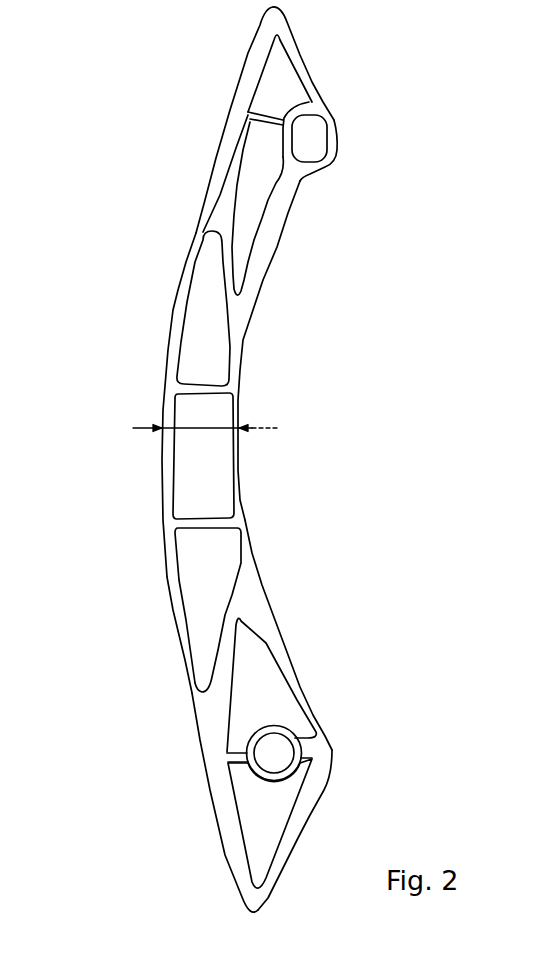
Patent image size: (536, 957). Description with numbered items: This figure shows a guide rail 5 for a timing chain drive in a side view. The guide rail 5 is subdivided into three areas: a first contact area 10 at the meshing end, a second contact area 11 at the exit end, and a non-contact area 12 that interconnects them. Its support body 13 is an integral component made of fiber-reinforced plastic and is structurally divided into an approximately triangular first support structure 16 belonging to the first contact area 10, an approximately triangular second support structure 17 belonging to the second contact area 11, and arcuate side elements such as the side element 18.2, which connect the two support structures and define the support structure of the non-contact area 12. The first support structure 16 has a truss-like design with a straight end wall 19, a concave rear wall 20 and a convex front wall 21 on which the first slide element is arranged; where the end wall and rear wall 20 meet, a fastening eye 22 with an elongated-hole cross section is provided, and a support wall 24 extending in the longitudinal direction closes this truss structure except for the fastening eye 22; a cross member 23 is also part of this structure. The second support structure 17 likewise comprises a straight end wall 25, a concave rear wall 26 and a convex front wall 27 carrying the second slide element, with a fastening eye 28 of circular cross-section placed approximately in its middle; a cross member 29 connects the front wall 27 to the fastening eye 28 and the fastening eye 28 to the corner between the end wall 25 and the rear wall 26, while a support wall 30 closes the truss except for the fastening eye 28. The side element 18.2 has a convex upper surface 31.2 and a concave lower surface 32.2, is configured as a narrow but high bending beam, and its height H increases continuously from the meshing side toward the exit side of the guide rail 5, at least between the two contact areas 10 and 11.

The guide rail 5 is at (88, 372).
The first contact area 10 is at (231, 98).
The second contact area 11 is at (213, 806).
The non-contact area 12 is at (157, 472).
The support body 13 is at (252, 601).
The first support structure 16 is at (270, 172).
The second support structure 17 is at (278, 723).
The side element 18.2 is at (170, 335).
The end wall 19 is at (290, 43).
The rear wall 20 is at (318, 304).
The front wall 21 is at (257, 53).
The fastening eye 22 is at (309, 135).
The cross member 23 is at (249, 116).
The support wall 24 is at (283, 80).
The end wall 25 is at (272, 880).
The rear wall 26 is at (294, 677).
The front wall 27 is at (233, 857).
The fastening eye 28 is at (293, 763).
The cross member 29 is at (232, 757).
The support wall 30 is at (260, 830).
The upper surface 31.2 is at (167, 578).
The lower surface 32.2 is at (241, 473).
The height of the side elements H is at (265, 427).